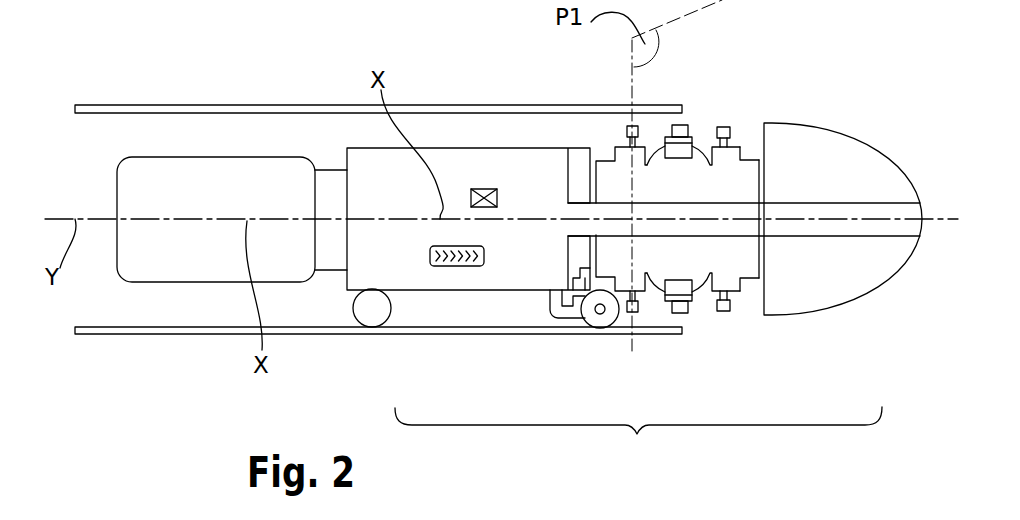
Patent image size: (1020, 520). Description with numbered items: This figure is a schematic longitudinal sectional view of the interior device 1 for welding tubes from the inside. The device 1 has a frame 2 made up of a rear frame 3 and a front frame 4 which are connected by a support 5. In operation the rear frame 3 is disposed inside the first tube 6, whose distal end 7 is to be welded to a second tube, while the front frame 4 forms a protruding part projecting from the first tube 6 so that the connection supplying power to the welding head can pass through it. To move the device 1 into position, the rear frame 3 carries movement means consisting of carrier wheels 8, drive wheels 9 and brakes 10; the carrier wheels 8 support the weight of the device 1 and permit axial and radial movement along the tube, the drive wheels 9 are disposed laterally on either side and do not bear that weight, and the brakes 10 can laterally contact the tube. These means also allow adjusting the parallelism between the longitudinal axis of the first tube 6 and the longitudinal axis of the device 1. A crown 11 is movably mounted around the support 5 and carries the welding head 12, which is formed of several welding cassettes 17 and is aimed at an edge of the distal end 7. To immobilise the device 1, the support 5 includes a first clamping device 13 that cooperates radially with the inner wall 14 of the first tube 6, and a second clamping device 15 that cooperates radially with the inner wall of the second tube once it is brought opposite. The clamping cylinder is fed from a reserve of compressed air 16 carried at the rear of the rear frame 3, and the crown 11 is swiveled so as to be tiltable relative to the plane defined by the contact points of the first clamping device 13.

The interior device 1 is at (217, 411).
The frame 2 is at (638, 306).
The rear frame 3 is at (518, 254).
The front frame 4 is at (803, 278).
The support 5 is at (707, 248).
The first tube 6 is at (338, 105).
The distal end 7 is at (680, 120).
The carrier wheels 8 is at (371, 310).
The drive wheels 9 is at (443, 267).
The brakes 10 is at (484, 189).
The crown 11 is at (670, 301).
The welding head 12 is at (704, 118).
The first clamping device 13 is at (628, 119).
The inner wall 14 is at (484, 113).
The second clamping device 15 is at (739, 118).
The reserve of compressed air 16 is at (158, 264).
The welding cassettes 17 is at (693, 125).